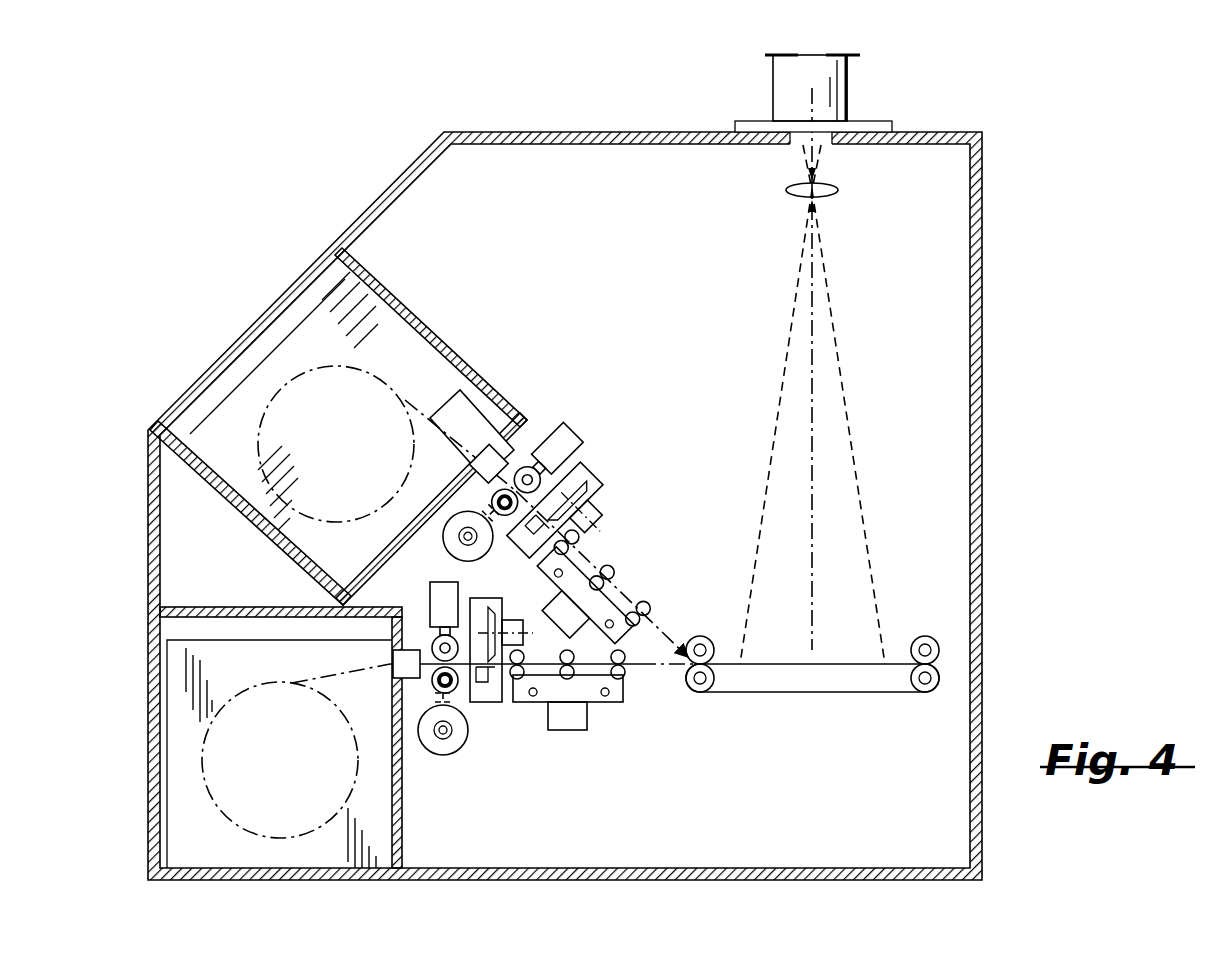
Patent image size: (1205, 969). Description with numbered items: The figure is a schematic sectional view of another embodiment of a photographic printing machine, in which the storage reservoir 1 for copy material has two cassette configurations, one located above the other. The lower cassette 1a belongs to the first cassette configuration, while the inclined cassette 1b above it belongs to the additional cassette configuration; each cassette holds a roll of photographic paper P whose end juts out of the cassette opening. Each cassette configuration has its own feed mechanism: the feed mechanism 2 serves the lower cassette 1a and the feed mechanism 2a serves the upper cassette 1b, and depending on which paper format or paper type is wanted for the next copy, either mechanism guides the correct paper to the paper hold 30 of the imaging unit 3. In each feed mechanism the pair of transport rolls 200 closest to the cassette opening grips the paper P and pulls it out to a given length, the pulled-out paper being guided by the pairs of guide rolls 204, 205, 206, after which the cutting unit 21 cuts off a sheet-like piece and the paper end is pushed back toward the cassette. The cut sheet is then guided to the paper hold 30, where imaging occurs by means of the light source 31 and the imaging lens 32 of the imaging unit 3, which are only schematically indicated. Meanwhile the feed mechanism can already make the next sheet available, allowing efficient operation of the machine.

The storage reservoir 1 is at (158, 330).
The cassette 1a is at (178, 703).
The cassette 1b is at (292, 348).
The feed mechanism 2 is at (590, 745).
The feed mechanism 2a is at (623, 436).
The imaging unit 3 is at (690, 193).
The cutting unit 21 is at (592, 482).
The paper hold 30 is at (857, 642).
The light source 31 is at (838, 90).
The imaging lens 32 is at (822, 196).
The pair of transport rolls 200 is at (432, 642).
The pair of guide rolls 204 is at (515, 705).
The pair of guide rolls 205 is at (565, 680).
The pair of guide rolls 206 is at (627, 679).
The paper P is at (440, 410).